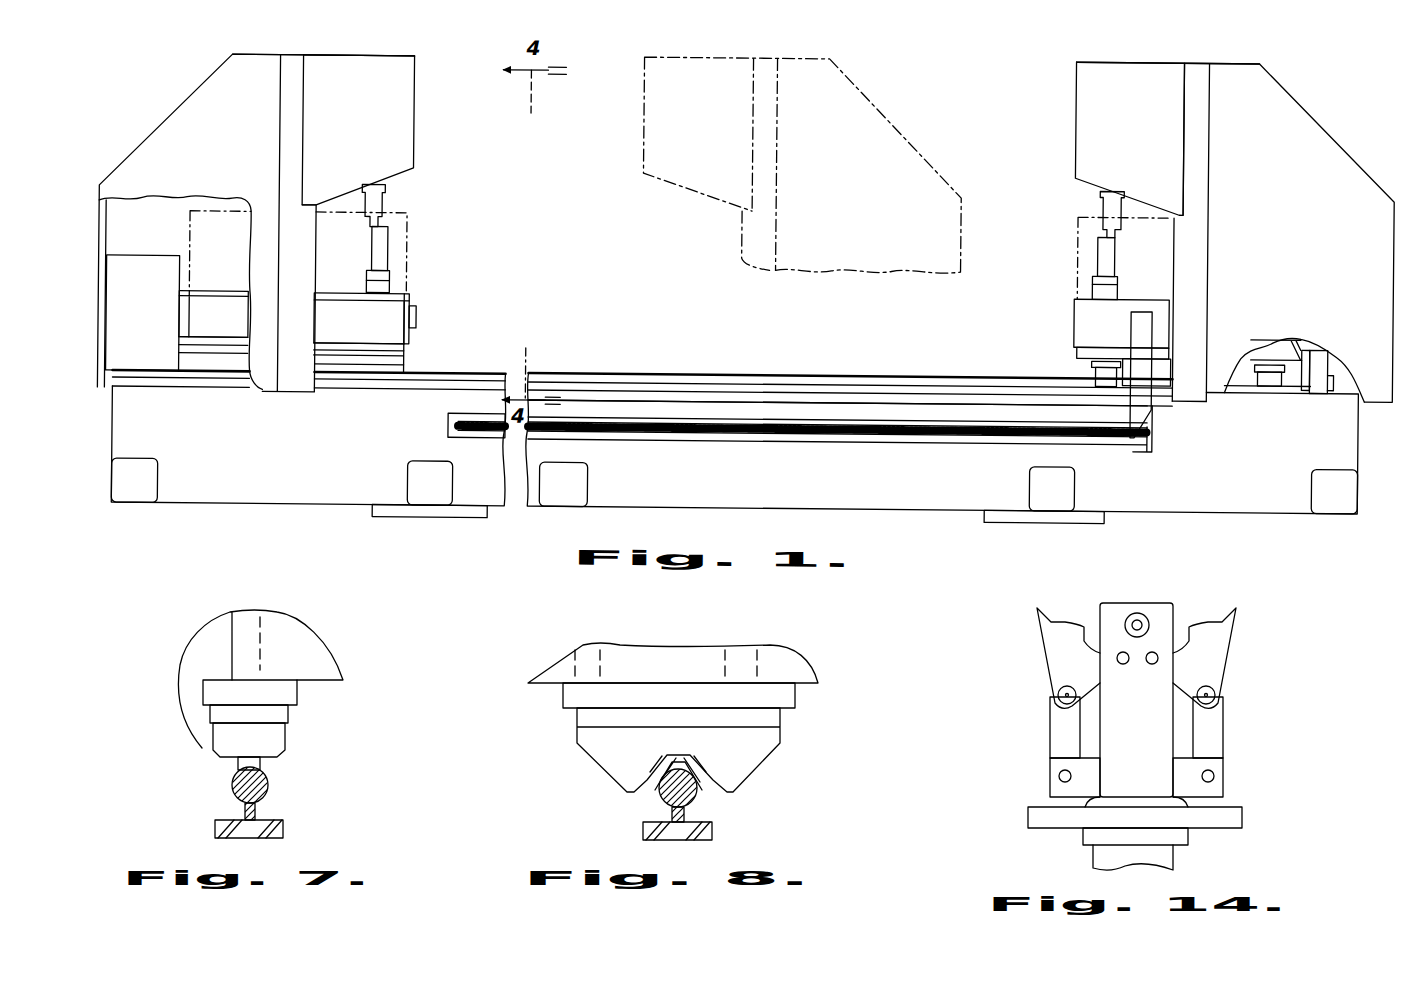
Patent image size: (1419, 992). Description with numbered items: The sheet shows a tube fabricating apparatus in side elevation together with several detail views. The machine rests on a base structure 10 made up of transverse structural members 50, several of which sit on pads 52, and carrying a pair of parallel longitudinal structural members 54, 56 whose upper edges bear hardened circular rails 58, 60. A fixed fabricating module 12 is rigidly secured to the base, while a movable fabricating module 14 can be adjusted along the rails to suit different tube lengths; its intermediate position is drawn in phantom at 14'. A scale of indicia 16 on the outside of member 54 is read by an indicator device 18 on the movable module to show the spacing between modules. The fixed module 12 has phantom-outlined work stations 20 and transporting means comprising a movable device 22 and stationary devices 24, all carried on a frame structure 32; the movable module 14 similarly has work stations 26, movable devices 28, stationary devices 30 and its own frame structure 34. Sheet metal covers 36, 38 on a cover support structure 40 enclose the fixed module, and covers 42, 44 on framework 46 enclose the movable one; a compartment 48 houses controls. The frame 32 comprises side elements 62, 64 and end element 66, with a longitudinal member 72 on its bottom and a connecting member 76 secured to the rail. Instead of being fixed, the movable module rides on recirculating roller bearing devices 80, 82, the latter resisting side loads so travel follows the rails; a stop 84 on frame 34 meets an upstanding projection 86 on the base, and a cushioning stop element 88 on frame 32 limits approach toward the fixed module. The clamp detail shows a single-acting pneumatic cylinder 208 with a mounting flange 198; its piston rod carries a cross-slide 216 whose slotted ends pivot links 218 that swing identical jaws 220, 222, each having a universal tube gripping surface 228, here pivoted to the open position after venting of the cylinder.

In FIG. 1, the base structure 10 is at (297, 507).
In FIG. 1, the fixed fabricating module 12 is at (420, 119).
In FIG. 1, the movable fabricating module 14 is at (1128, 94).
In FIG. 1, the intermediate position of movable module 14' is at (803, 156).
In FIG. 1, the indicia 16 is at (780, 437).
In FIG. 1, the indicator device 18 is at (1153, 408).
In FIG. 1, the work stations 20 is at (405, 232).
In FIG. 1, the movable device 22 is at (390, 199).
In FIG. 1, the stationary devices 24 is at (390, 262).
In FIG. 1, the work stations 26 is at (1076, 237).
In FIG. 1, the movable devices 28 is at (1097, 203).
In FIG. 1, the stationary devices 30 is at (1088, 269).
In FIG. 1, the frame structure 32 is at (381, 337).
In FIG. 1, the frame structure 34 is at (1093, 324).
In FIG. 7, the frame structure 34 is at (315, 630).
In FIG. 8, the frame structure 34 is at (540, 670).
In FIG. 1, the sheet metal cover 36 is at (187, 116).
In FIG. 1, the sheet metal cover 38 is at (372, 60).
In FIG. 1, the cover support structure 40 is at (289, 60).
In FIG. 1, the cover 42 is at (1297, 121).
In FIG. 1, the cover 44 is at (1118, 68).
In FIG. 1, the cover support framework 46 is at (1194, 68).
In FIG. 1, the compartment 48 is at (135, 271).
In FIG. 1, the transverse structural members 50 is at (131, 497).
In FIG. 1, the pads 52 is at (448, 513).
In FIG. 1, the longitudinally extending structural member 54 is at (873, 485).
In FIG. 8, the longitudinally extending structural member 54 is at (643, 830).
In FIG. 7, the longitudinally extending structural member 56 is at (283, 829).
In FIG. 1, the rail 58 is at (645, 375).
In FIG. 8, the rail 58 is at (697, 802).
In FIG. 7, the rail 60 is at (268, 784).
In FIG. 1, the structural side element 62 is at (408, 309).
In FIG. 1, the structural side element 64 is at (180, 322).
In FIG. 1, the end element 66 is at (341, 334).
In FIG. 1, the longitudinally extending member 72 is at (408, 352).
In FIG. 1, the connecting member 76 is at (363, 371).
In FIG. 7, the linear motion roller bearing device 80 is at (278, 735).
In FIG. 1, the linear motion roller bearing device 82 is at (1097, 368).
In FIG. 8, the linear motion roller bearing device 82 is at (602, 757).
In FIG. 1, the stop 84 is at (1317, 363).
In FIG. 1, the upstanding projection 86 is at (1331, 373).
In FIG. 1, the cushioning stop element 88 is at (416, 322).
In FIG. 14, the mounting flange 198 is at (1242, 816).
In FIG. 14, the single-acting pneumatic cylinder 208 is at (1175, 861).
In FIG. 14, the cross-slide 216 is at (1217, 788).
In FIG. 14, the link 218 is at (1057, 728).
In FIG. 14, the jaw 220 is at (1048, 657).
In FIG. 14, the jaw 222 is at (1230, 648).
In FIG. 14, the tube gripping surface 228 is at (1219, 622).